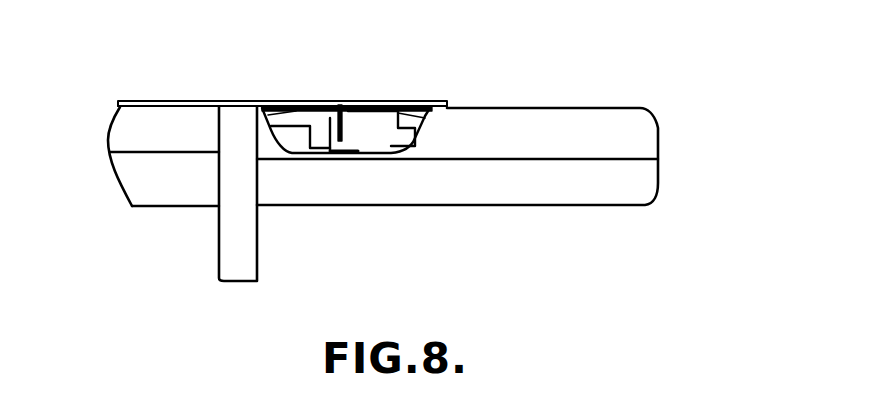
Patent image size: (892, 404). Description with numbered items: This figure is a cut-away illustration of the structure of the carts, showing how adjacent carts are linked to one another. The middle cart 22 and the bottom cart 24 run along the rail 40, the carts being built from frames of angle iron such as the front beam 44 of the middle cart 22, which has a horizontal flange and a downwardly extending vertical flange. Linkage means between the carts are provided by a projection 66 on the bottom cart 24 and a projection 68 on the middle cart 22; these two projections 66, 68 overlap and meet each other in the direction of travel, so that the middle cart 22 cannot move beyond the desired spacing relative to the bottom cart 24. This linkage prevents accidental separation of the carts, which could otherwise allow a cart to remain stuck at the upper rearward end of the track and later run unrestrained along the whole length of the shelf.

The middle cart 22 is at (647, 130).
The bottom cart 24 is at (177, 103).
The rail 40 is at (350, 192).
The front beam 44 is at (248, 243).
The projection 66 is at (363, 104).
The projection 68 is at (336, 104).